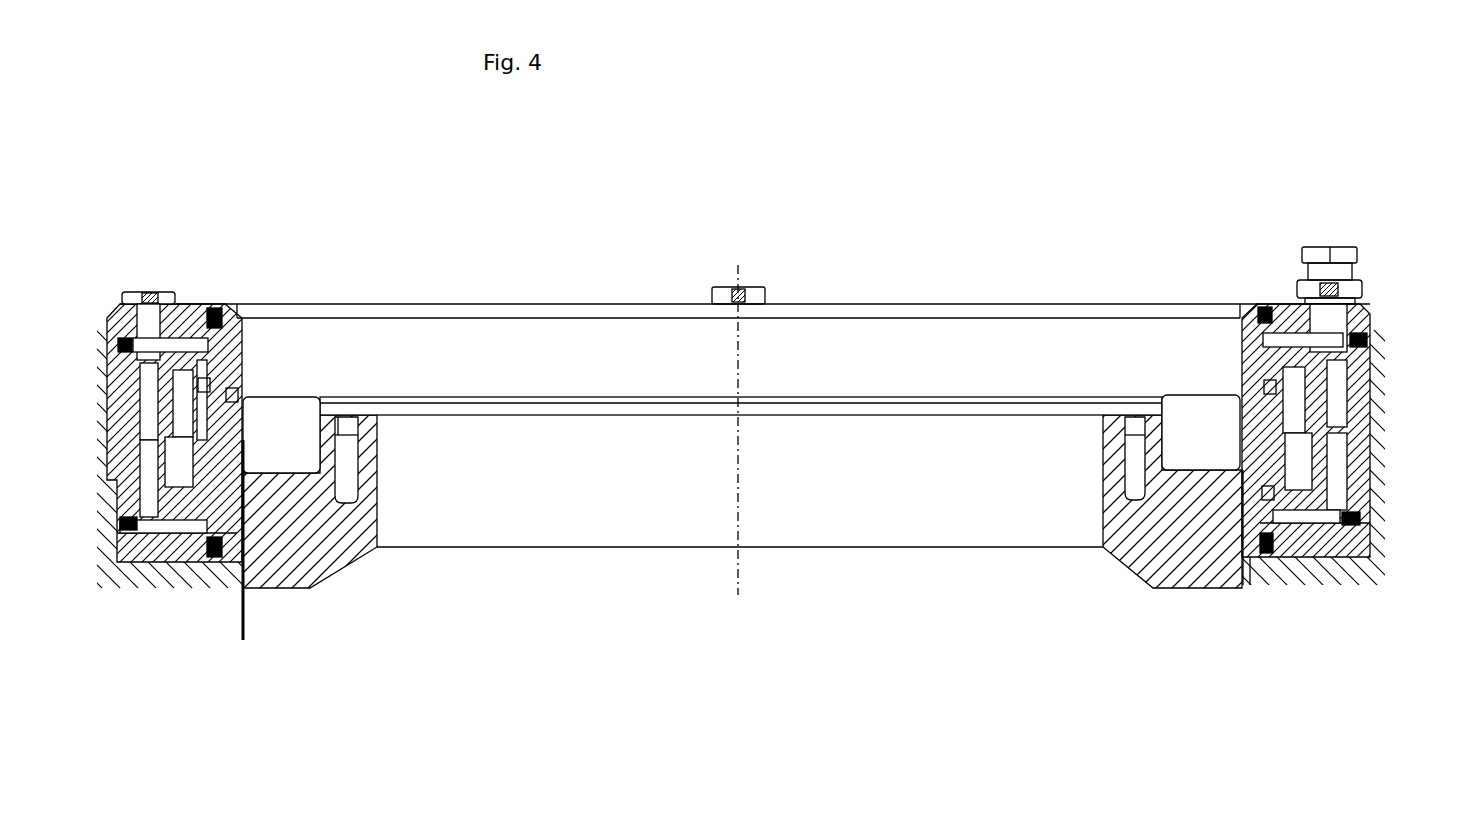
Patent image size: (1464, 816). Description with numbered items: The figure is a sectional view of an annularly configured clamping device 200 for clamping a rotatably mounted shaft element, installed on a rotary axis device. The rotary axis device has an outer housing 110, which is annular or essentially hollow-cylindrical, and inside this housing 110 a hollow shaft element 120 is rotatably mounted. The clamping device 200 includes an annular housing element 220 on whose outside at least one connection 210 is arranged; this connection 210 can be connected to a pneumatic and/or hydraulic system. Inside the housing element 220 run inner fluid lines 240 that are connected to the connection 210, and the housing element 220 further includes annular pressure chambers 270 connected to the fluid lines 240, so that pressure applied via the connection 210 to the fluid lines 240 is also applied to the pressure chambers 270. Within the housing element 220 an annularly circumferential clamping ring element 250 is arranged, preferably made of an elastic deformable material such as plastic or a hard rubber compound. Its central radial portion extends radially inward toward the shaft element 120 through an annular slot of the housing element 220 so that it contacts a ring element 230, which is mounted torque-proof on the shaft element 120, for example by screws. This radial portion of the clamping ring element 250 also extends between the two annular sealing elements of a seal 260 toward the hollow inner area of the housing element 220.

The outer housing 110 is at (157, 587).
The hollow shaft element 120 is at (1110, 548).
The clamping device 200 is at (862, 230).
The connection 210 is at (1358, 256).
The housing element 220 is at (512, 302).
The ring element 230 is at (290, 417).
The inner fluid lines 240 is at (140, 387).
The clamping ring element 250 is at (205, 385).
The seal 260 is at (243, 640).
The annular pressure chambers 270 is at (233, 396).